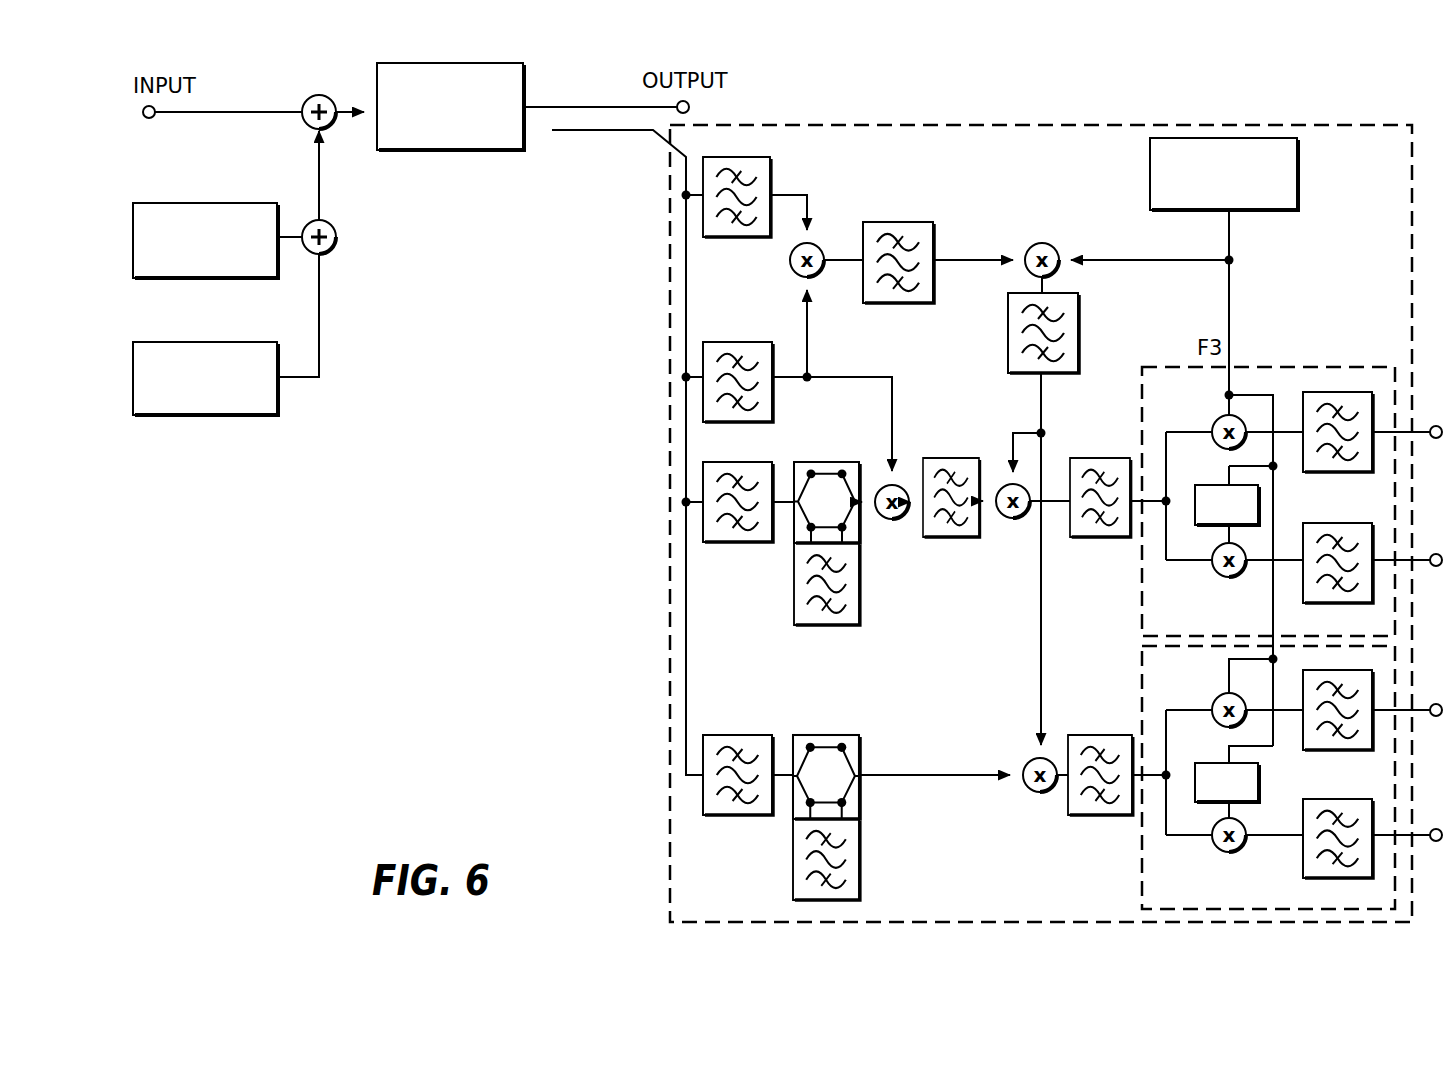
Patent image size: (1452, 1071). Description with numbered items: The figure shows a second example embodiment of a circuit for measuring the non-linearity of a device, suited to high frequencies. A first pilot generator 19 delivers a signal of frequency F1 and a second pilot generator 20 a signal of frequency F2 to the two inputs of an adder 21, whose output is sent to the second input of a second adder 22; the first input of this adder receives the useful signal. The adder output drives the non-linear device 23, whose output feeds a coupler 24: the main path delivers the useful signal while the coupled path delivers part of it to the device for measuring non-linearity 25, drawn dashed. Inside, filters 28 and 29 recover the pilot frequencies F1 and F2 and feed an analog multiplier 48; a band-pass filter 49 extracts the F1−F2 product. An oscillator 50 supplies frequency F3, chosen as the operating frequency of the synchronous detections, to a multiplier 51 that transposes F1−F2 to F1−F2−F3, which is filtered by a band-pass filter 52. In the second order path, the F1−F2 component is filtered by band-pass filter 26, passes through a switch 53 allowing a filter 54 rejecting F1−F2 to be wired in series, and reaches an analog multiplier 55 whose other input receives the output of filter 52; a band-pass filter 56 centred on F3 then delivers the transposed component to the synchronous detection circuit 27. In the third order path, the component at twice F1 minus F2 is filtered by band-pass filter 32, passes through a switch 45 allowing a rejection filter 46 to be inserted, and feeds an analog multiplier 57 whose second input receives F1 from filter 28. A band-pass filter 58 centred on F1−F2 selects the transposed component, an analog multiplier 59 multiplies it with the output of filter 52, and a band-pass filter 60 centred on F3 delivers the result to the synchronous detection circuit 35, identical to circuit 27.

The first pilot generator 19 is at (232, 203).
The second pilot generator 20 is at (218, 415).
The adder 21 is at (336, 243).
The second adder 22 is at (310, 97).
The non-linear device 23 is at (480, 150).
The coupler 24 is at (578, 130).
The device for measuring non-linearity 25 is at (1052, 125).
The band-pass filter 26 is at (742, 735).
The synchronous detection circuit 27 is at (1142, 888).
The filter 28 is at (720, 342).
The filter 29 is at (775, 167).
The band-pass filter 32 is at (765, 462).
The synchronous detection circuit 35 is at (1310, 367).
The switch 45 is at (840, 462).
The filter 46 is at (859, 598).
The analog multiplier 48 is at (818, 247).
The band-pass filter 49 is at (930, 222).
The oscillator 50 is at (1297, 190).
The multiplier 51 is at (1043, 243).
The band-pass filter 52 is at (1078, 312).
The switch 53 is at (825, 735).
The filter 54 is at (859, 870).
The analog multiplier 55 is at (1030, 762).
The band-pass filter 56 is at (1078, 735).
The analog multiplier 57 is at (898, 520).
The band-pass filter 58 is at (942, 458).
The analog multiplier 59 is at (1016, 518).
The band-pass filter 60 is at (1090, 458).